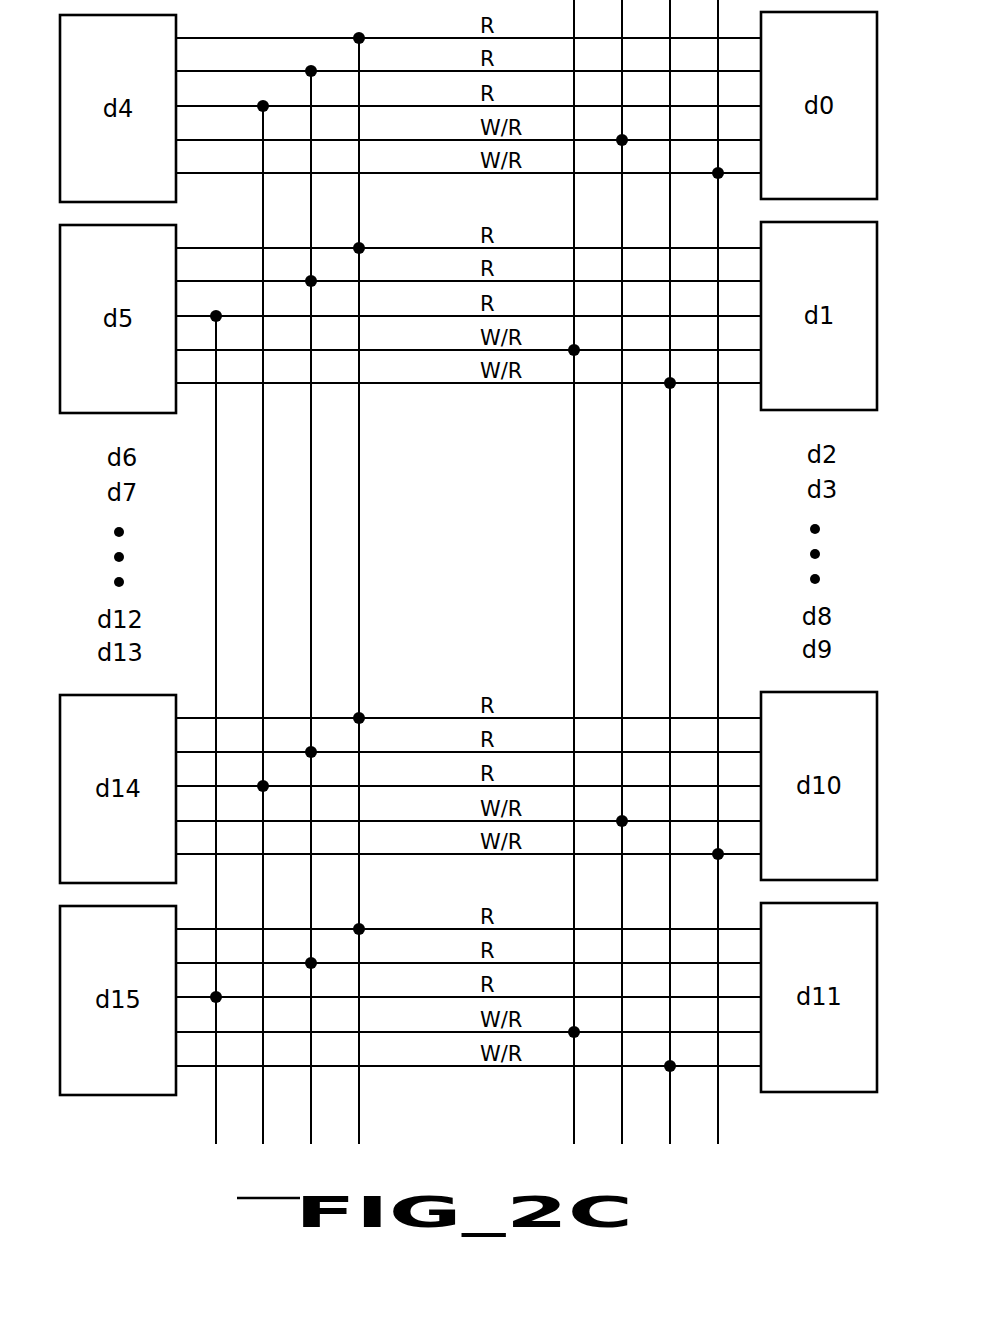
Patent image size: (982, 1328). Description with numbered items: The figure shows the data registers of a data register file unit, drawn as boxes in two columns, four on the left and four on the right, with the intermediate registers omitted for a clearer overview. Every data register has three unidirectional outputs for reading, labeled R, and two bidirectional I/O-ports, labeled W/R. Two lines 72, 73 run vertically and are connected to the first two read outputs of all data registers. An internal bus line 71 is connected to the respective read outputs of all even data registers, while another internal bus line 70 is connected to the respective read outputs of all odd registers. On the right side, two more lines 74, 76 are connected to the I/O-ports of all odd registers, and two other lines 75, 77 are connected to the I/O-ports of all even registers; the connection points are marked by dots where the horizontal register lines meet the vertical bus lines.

The internal bus line 70 is at (216, 518).
The internal bus line 71 is at (263, 558).
The line 72 is at (311, 602).
The line 73 is at (359, 642).
The line 74 is at (574, 516).
The line 75 is at (622, 557).
The line 76 is at (670, 600).
The line 77 is at (718, 640).